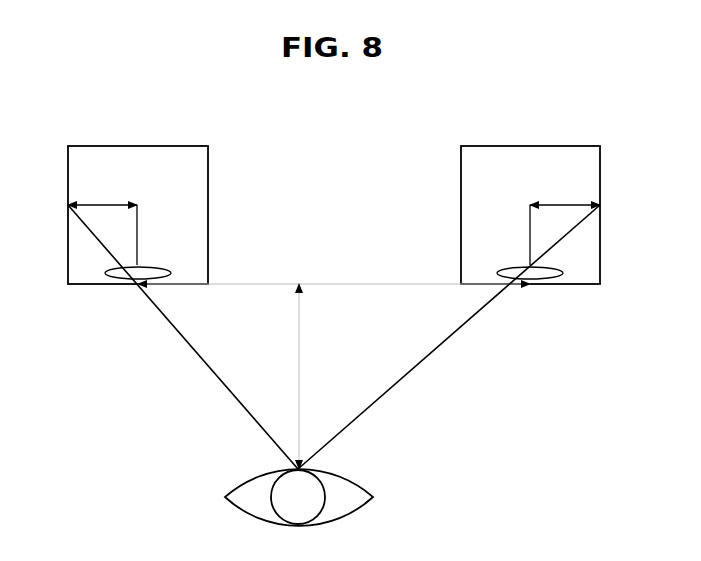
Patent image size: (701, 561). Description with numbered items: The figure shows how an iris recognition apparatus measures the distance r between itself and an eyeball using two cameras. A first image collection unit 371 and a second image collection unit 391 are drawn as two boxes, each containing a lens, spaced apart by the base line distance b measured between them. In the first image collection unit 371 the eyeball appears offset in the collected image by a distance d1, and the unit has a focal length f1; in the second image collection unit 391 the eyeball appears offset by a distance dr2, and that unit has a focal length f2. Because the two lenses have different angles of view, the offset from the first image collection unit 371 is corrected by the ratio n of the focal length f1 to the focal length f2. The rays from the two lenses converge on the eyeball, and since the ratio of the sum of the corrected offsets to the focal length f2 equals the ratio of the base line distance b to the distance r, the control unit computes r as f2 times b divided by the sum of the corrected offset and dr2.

The first image collection unit 371 is at (138, 190).
The second image collection unit 391 is at (530, 190).
The distance of eyeball of image collected by first image collection unit d1 is at (102, 194).
The focal length of first image collection unit f1 is at (151, 235).
The distance of eyeball of image collected by second image collection unit dr2 is at (565, 194).
The focal length of second image collection unit f2 is at (517, 235).
The base line distance b is at (334, 274).
The distance between iris recognition apparatus and eyeball r is at (304, 376).